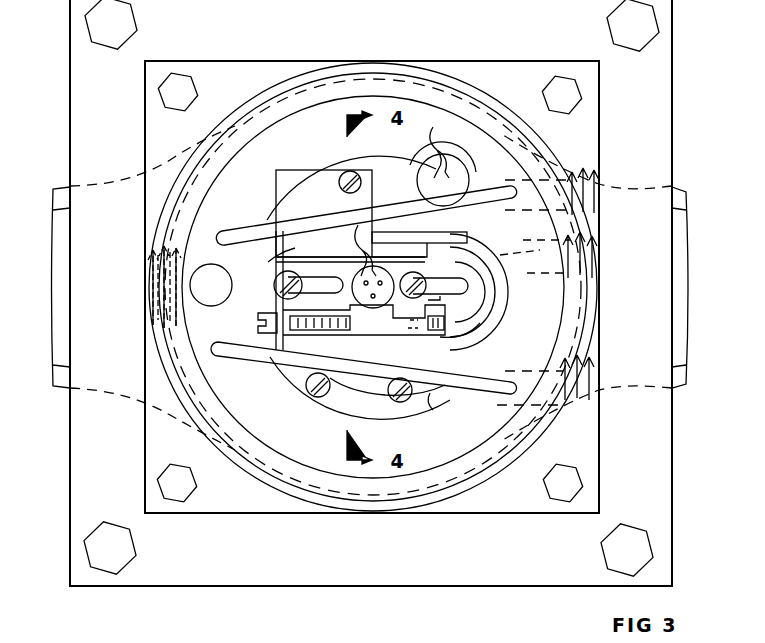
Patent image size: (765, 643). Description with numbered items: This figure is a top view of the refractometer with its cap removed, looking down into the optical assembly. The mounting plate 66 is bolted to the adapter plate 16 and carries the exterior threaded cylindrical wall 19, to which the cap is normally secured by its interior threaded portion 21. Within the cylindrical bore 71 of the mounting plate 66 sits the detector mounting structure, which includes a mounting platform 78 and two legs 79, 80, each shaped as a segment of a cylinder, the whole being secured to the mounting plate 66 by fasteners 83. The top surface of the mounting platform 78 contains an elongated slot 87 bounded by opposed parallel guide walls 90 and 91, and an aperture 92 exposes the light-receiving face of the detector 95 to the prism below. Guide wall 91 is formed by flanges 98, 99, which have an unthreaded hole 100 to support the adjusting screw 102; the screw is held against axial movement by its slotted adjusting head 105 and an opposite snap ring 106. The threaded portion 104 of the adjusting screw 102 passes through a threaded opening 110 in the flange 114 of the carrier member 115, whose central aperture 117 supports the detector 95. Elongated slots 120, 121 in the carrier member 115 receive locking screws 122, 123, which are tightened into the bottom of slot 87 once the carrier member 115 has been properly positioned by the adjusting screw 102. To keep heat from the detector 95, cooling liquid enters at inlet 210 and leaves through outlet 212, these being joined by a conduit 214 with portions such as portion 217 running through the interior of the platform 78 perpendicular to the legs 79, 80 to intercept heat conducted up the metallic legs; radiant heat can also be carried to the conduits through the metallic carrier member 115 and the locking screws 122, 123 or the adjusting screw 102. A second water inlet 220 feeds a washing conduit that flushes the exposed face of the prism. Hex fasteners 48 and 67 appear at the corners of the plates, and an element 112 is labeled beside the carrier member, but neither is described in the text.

The adapter plate 16 is at (70, 80).
The exterior threaded cylindrical wall 19 is at (212, 133).
The interior threaded portion 21 is at (321, 333).
The hex nut 48 is at (86, 17).
The mounting plate 66 is at (145, 137).
The hex nut 67 is at (178, 85).
The cylindrical bore 71 is at (310, 182).
The mounting platform 78 is at (340, 395).
The leg 79 is at (378, 185).
The leg 80 is at (430, 390).
The fasteners 83 is at (310, 393).
The elongated slot 87 is at (290, 247).
The guide wall 90 is at (349, 250).
The guide wall 91 is at (383, 314).
The aperture 92 is at (278, 296).
The detector 95 is at (408, 279).
The flange 98 is at (290, 335).
The flange 99 is at (411, 338).
The unthreaded hole 100 is at (256, 312).
The adjusting screw 102 is at (335, 335).
The threaded portion 104 is at (340, 345).
The slotted adjusting head 105 is at (268, 335).
The snap ring 106 is at (470, 337).
The threaded opening 110 is at (370, 335).
The arc plate 112 is at (437, 272).
The flange 114 is at (364, 320).
The carrier member 115 is at (482, 292).
The central aperture 117 is at (316, 292).
The elongated slot 120 is at (359, 284).
The elongated slot 121 is at (440, 275).
The locking screw 122 is at (350, 290).
The locking screw 123 is at (445, 297).
The cooling liquid inlet 210 is at (592, 362).
The outlet 212 is at (535, 155).
The conduit 214 is at (500, 262).
The conduit portion 217 is at (425, 240).
The second water inlet 220 is at (596, 257).